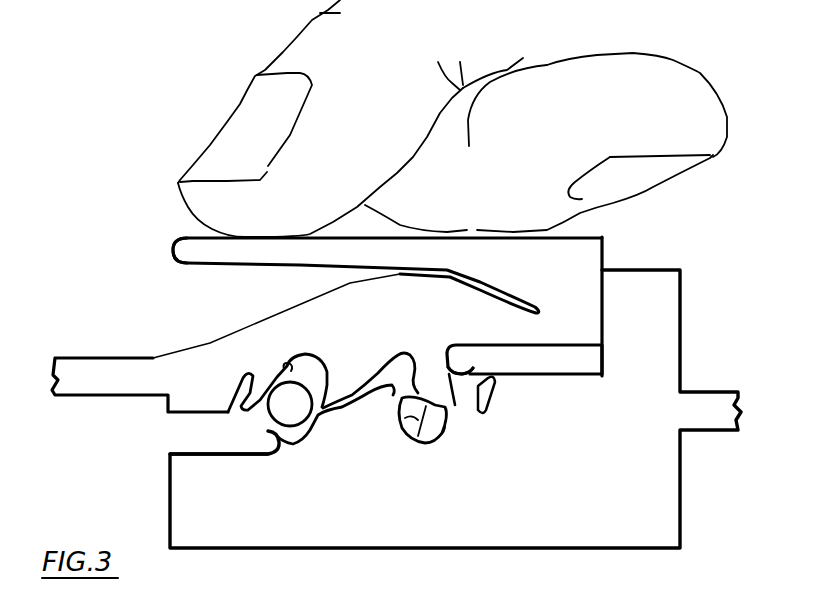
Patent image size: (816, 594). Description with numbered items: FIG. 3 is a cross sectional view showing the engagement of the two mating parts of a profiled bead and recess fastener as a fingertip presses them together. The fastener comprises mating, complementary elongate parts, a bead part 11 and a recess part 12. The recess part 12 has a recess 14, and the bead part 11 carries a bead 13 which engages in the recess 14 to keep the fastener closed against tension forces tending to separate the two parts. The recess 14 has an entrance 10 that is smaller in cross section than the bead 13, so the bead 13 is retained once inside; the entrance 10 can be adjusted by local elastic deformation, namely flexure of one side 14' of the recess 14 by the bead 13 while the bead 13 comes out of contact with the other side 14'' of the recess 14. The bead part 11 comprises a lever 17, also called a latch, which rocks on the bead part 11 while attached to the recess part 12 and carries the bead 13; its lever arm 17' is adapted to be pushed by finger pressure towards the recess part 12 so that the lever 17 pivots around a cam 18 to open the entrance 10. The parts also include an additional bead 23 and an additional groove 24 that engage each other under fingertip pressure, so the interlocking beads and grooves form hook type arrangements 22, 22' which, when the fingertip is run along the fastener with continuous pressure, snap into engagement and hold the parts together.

The entrance 10 is at (415, 443).
The bead part 11 is at (278, 337).
The recess part 12 is at (599, 525).
The bead 13 is at (464, 378).
The recess 14 is at (594, 386).
The side of the recess 14' is at (557, 320).
The other side of the recess 14'' is at (246, 486).
The lever 17 is at (387, 241).
The lever arm 17' is at (144, 222).
The cam 18 is at (313, 295).
The hook type arrangement 22 is at (398, 295).
The hook type arrangement 22' is at (236, 435).
The additional bead 23 is at (290, 408).
The additional groove 24 is at (290, 367).